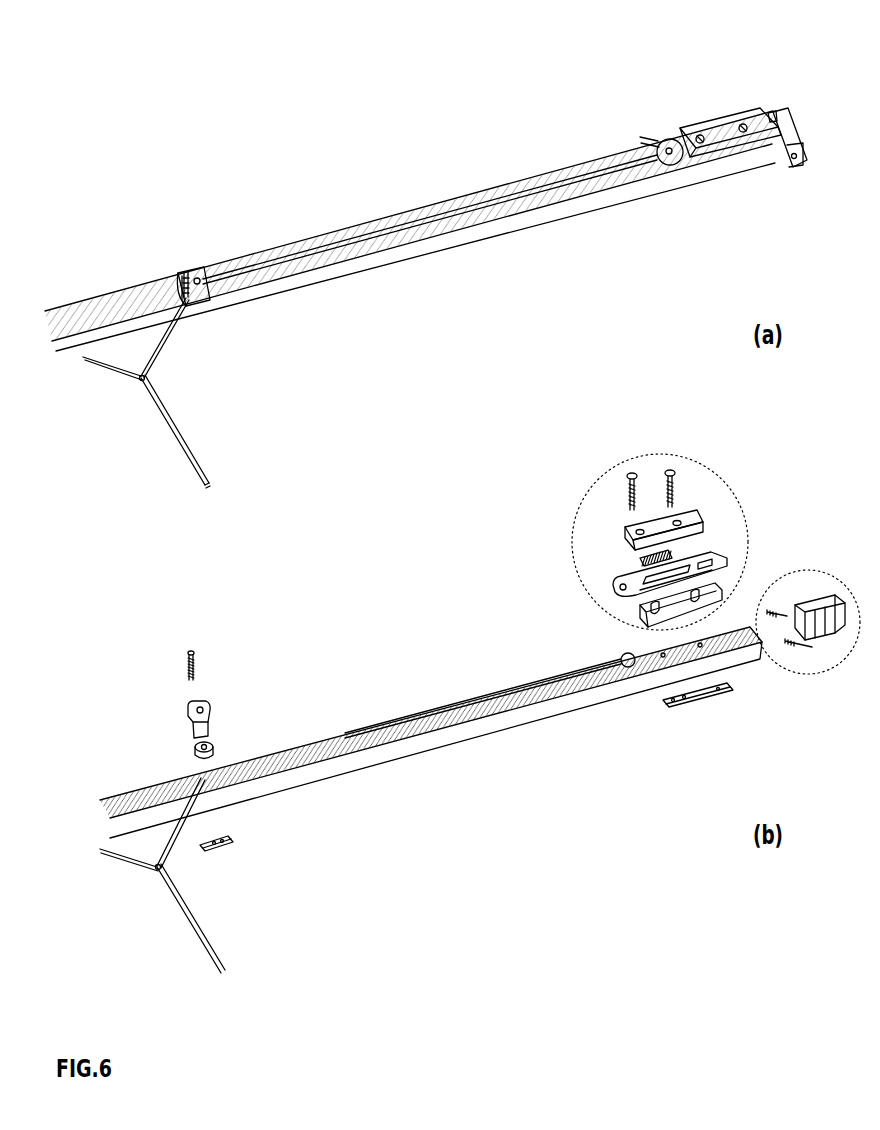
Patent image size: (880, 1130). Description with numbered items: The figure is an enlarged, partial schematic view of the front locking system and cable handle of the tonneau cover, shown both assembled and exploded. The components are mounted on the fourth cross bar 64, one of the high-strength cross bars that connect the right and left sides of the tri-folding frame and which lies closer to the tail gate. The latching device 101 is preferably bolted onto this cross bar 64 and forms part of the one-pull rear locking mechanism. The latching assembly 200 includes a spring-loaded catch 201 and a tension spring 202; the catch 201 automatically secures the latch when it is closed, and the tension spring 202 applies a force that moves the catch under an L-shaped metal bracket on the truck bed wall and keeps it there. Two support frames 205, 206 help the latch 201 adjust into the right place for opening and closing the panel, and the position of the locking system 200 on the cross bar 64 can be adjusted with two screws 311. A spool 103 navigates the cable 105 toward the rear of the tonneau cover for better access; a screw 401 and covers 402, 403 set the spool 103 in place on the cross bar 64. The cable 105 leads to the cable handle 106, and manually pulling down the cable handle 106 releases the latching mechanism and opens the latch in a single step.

The cross bar four 64 is at (84, 318).
The latching device 101 is at (712, 120).
The spool 103 is at (203, 312).
The cable 105 is at (287, 250).
The cable handle 106 is at (208, 440).
The latching assembly 200 is at (715, 472).
The spring-loaded catch 201 is at (770, 110).
The tension spring 202 is at (632, 559).
The support frame 205 is at (635, 618).
The support frame 206 is at (612, 527).
The screw 311 is at (729, 160).
The screw 401 is at (205, 656).
The cover 402 is at (240, 840).
The cover 403 is at (190, 266).